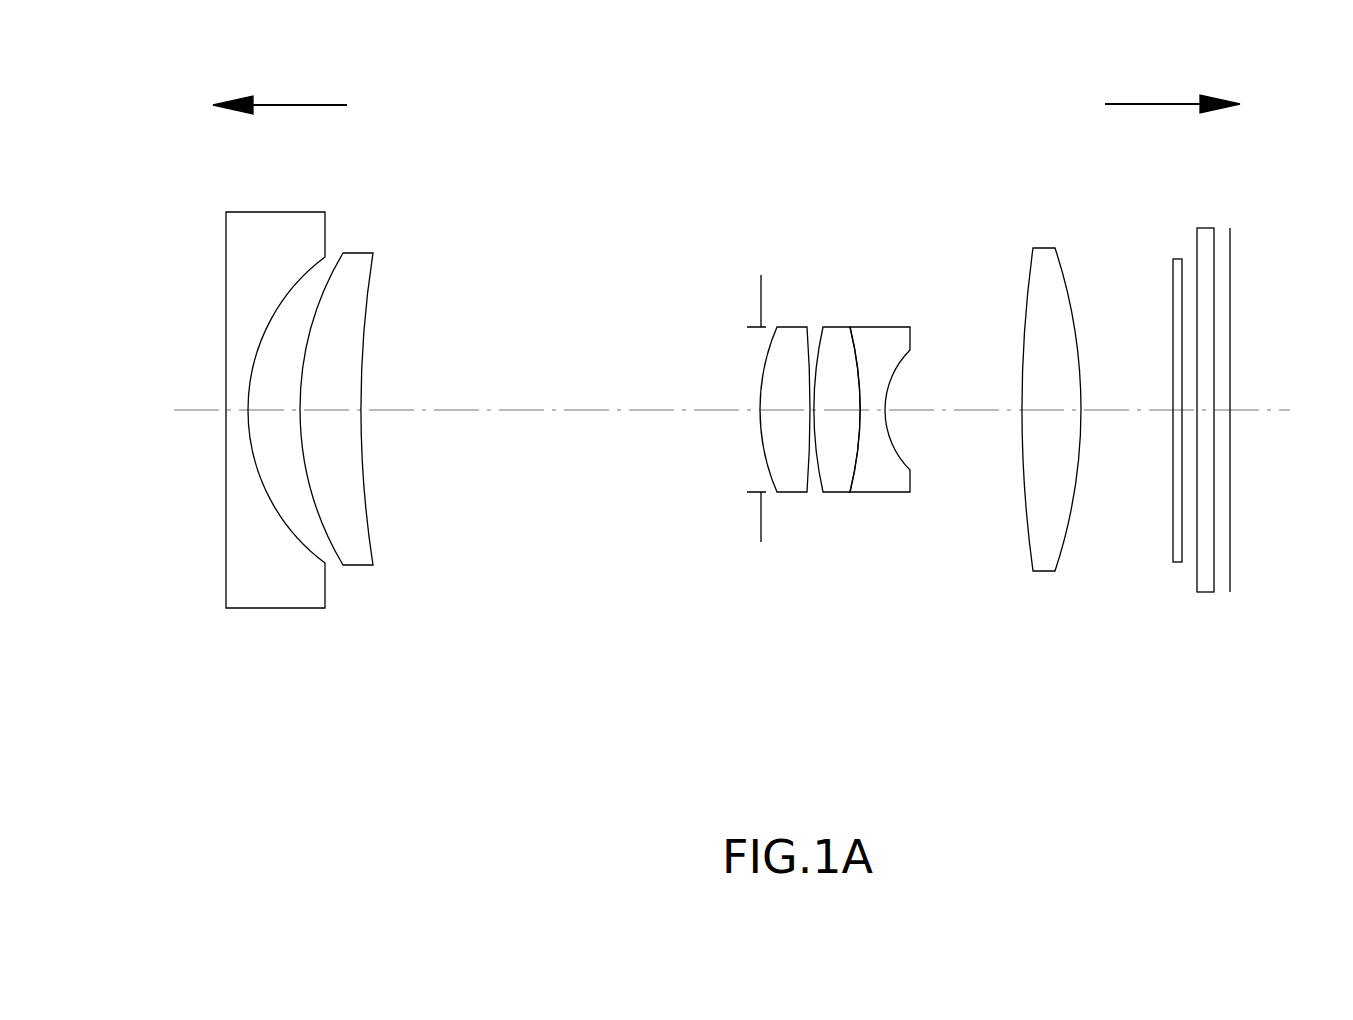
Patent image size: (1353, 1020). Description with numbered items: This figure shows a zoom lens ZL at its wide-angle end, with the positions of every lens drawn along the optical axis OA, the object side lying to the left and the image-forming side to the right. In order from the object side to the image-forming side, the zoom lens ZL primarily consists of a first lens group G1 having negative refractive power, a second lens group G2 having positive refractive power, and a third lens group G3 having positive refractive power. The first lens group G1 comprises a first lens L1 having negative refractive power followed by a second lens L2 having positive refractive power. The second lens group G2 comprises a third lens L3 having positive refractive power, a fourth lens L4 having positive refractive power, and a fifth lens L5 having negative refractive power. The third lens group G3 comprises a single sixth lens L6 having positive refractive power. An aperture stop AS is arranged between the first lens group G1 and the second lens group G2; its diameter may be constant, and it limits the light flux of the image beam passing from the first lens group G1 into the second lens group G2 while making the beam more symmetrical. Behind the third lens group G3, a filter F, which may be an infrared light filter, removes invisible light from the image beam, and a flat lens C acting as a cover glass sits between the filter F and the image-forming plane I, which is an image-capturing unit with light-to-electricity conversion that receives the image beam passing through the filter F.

The zoom lens ZL is at (103, 79).
The optical axis OA is at (754, 414).
The first lens group G1 is at (390, 201).
The second lens group G2 is at (922, 308).
The third lens group G3 is at (1078, 222).
The first lens L1 is at (274, 609).
The second lens L2 is at (356, 567).
The third lens L3 is at (791, 494).
The fourth lens L4 is at (841, 494).
The fifth lens L5 is at (895, 494).
The sixth lens L6 is at (1040, 573).
The aperture stop AS is at (761, 520).
The filter F is at (1176, 258).
The flat lens C is at (1204, 226).
The image-forming plane I is at (1233, 233).